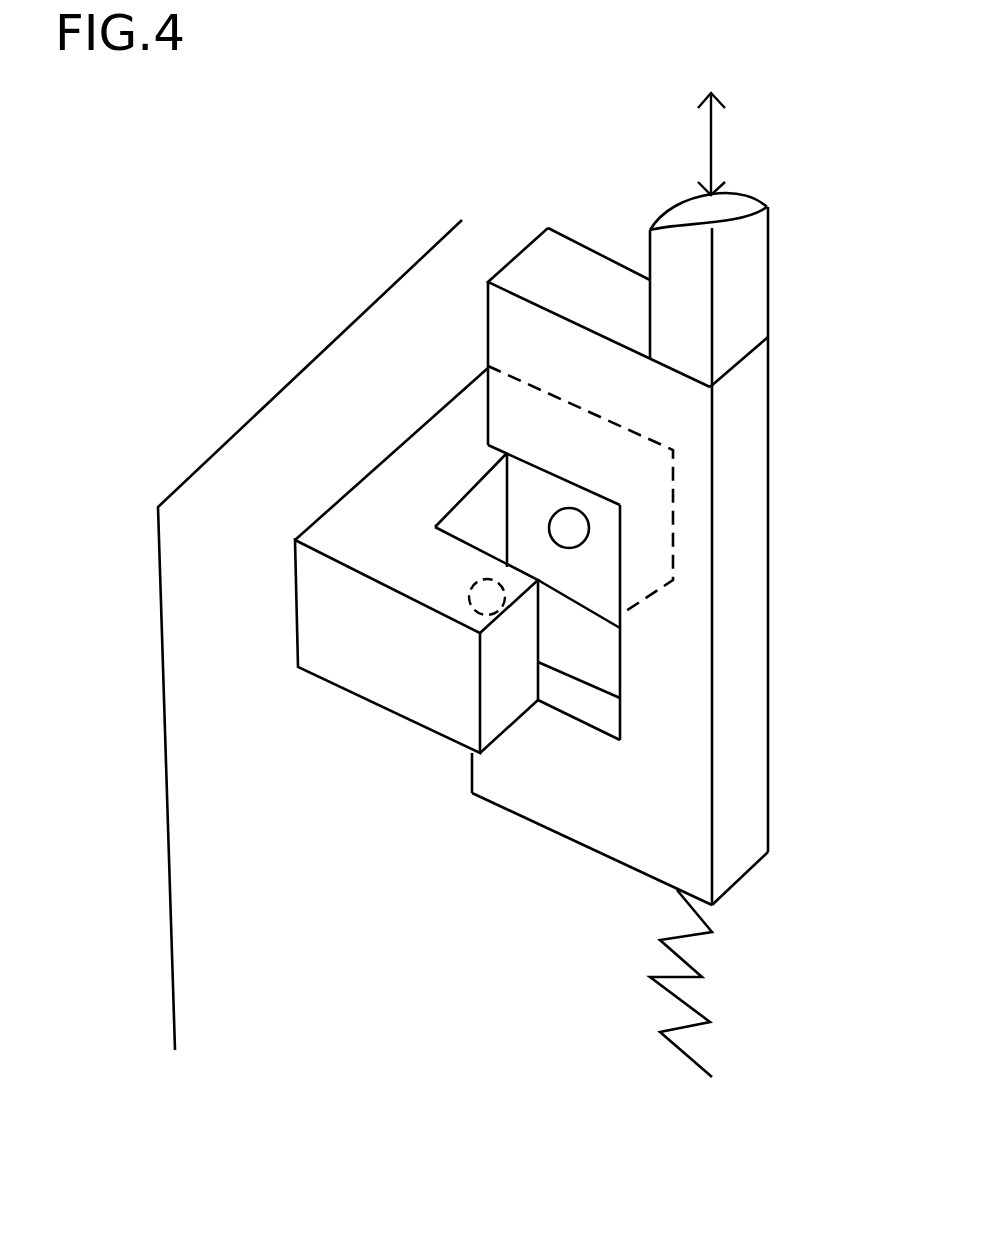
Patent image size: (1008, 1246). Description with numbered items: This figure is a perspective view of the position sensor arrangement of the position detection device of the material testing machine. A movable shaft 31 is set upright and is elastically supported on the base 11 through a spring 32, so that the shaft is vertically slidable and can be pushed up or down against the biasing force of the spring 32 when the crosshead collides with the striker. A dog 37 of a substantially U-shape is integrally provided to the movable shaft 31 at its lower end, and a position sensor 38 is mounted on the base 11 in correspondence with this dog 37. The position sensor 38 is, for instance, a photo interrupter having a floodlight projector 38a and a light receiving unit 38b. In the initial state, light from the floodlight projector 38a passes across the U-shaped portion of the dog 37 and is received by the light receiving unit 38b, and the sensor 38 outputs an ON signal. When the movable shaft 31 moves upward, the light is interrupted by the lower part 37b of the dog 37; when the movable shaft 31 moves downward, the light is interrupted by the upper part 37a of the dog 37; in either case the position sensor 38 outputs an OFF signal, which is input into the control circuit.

The base 11 is at (159, 675).
The movable shaft 31 is at (768, 277).
The spring 32 is at (728, 968).
The dog 37 is at (769, 797).
The upper part of the dog 37a is at (507, 327).
The lower part of the dog 37b is at (570, 815).
The position sensor 38 is at (375, 707).
The floodlight projector 38a is at (503, 590).
The light receiving unit 38b is at (589, 527).